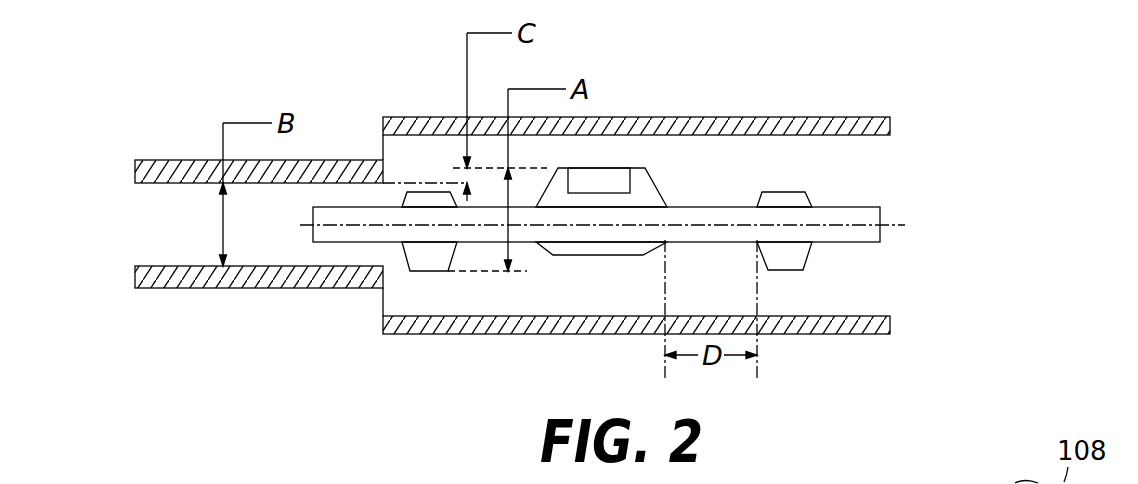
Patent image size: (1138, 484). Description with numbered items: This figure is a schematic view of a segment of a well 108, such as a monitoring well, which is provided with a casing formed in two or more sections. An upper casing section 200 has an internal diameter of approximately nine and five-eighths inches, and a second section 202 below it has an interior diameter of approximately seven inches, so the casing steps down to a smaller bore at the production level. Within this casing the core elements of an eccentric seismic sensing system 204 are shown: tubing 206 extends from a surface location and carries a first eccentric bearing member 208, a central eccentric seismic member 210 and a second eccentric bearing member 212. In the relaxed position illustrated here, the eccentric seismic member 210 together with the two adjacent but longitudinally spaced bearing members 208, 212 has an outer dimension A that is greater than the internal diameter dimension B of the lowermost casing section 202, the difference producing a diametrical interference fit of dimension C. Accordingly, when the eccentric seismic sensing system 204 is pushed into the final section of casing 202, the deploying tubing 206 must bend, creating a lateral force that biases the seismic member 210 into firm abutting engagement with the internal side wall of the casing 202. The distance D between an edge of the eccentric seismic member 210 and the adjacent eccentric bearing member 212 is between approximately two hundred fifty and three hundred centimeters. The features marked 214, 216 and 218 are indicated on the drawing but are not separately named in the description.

The well 108 is at (1053, 104).
The upper casing section 200 is at (890, 334).
The second section 202 is at (139, 290).
The eccentric seismic sensing system 204 is at (688, 267).
The tubing 206 is at (880, 243).
The first eccentric bearing member 208 is at (429, 285).
The central eccentric seismic member 210 is at (602, 272).
The second eccentric bearing member 212 is at (793, 293).
The outer surface of second collar 214 is at (532, 168).
The outer surface of first collar 216 is at (480, 272).
The inner diameter of inner housing 218 is at (223, 216).